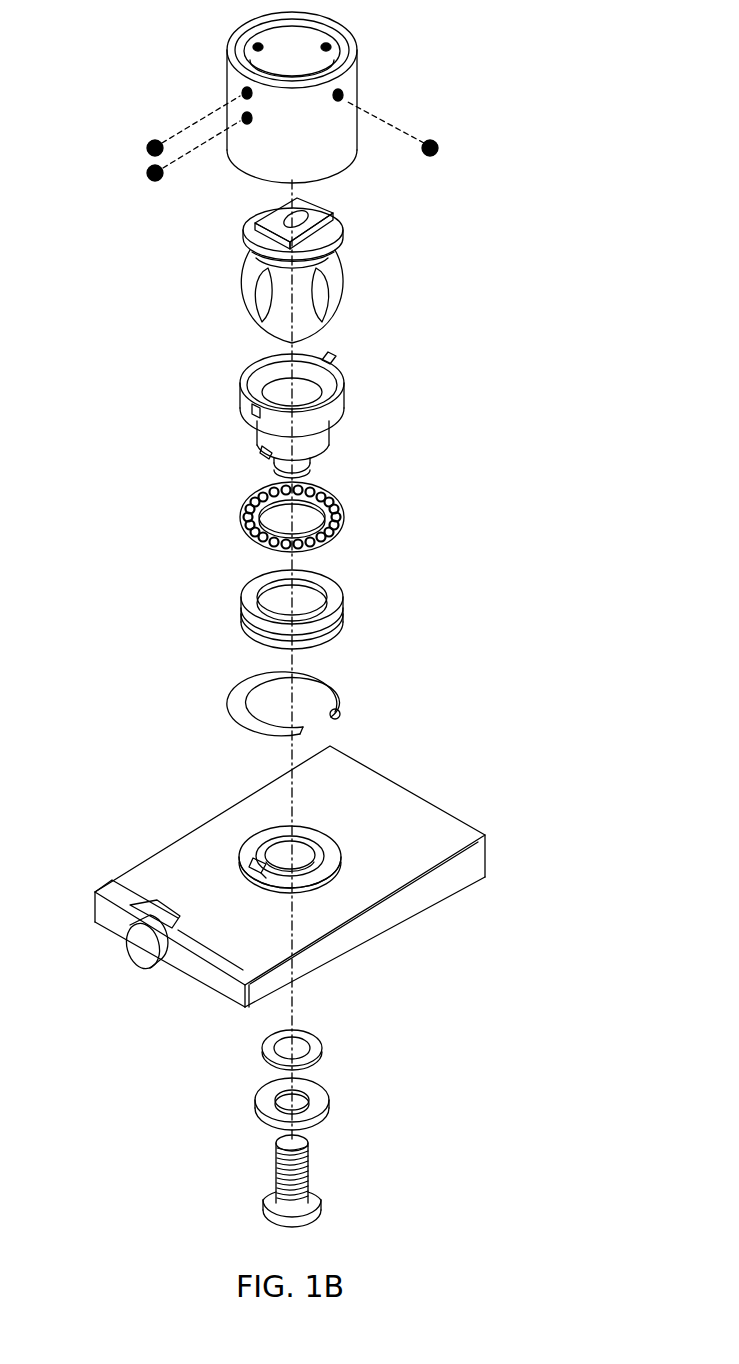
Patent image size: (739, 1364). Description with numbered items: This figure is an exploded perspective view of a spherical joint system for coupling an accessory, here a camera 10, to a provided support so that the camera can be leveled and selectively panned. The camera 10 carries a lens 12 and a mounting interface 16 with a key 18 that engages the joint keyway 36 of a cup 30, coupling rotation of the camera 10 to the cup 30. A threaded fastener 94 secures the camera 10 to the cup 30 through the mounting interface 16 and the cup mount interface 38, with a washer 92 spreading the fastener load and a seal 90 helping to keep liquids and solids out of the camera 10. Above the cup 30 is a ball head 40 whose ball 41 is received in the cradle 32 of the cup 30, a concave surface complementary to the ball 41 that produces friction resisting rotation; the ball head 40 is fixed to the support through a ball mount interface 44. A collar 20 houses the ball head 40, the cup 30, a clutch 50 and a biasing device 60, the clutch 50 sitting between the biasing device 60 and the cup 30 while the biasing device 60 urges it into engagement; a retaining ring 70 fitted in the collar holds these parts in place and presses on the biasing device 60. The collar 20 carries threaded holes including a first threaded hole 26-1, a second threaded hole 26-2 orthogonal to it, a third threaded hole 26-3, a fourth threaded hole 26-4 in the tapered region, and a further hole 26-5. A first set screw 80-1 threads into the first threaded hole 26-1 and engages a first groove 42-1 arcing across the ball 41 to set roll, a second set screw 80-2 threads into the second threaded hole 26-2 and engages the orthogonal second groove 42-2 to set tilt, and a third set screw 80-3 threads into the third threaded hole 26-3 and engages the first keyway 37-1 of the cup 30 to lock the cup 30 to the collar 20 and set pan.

The camera 10 is at (260, 880).
The lens 12 is at (152, 972).
The mounting interface 16 is at (322, 830).
The key 18 is at (262, 862).
The collar 20 is at (357, 60).
The first threaded hole 26-1 is at (344, 95).
The second threaded hole 26-2 is at (242, 93).
The third threaded hole 26-3 is at (242, 118).
The fourth threaded hole 26-4 is at (252, 44).
The pin hole 26-5 is at (330, 44).
The cup 30 is at (282, 412).
The cradle 32 is at (318, 378).
The joint keyway 36 is at (262, 454).
The first keyway 37-1 is at (250, 410).
The cup mount interface 38 is at (318, 474).
The ball head 40 is at (288, 269).
The ball 41 is at (345, 280).
The first groove 42-1 is at (338, 316).
The second groove 42-2 is at (252, 316).
The ball mount interface 44 is at (330, 200).
The clutch 50 is at (345, 525).
The biasing device 60 is at (344, 612).
The retaining ring 70 is at (342, 716).
The first set screw 80-1 is at (436, 142).
The second set screw 80-2 is at (148, 143).
The third set screw 80-3 is at (160, 181).
The seal 90 is at (322, 1050).
The washer 92 is at (330, 1106).
The threaded fastener 94 is at (322, 1206).